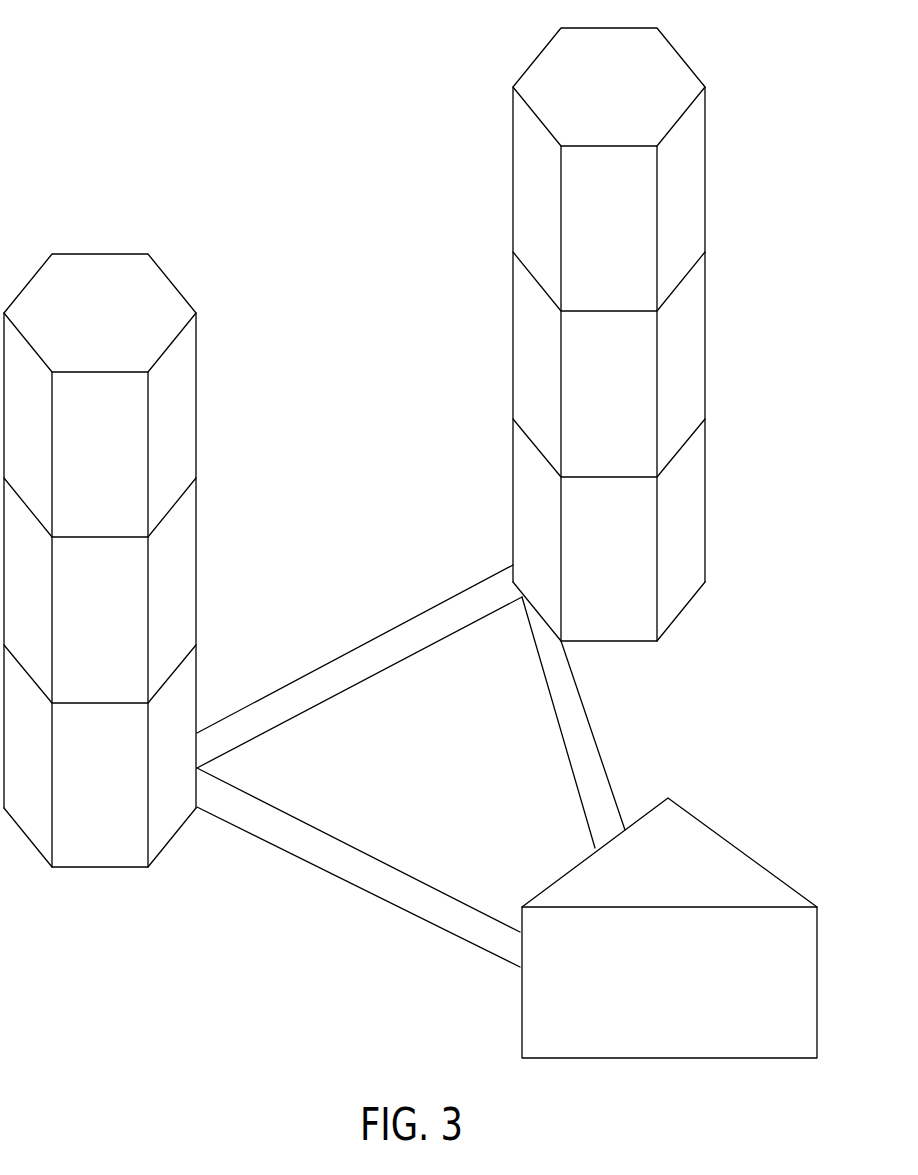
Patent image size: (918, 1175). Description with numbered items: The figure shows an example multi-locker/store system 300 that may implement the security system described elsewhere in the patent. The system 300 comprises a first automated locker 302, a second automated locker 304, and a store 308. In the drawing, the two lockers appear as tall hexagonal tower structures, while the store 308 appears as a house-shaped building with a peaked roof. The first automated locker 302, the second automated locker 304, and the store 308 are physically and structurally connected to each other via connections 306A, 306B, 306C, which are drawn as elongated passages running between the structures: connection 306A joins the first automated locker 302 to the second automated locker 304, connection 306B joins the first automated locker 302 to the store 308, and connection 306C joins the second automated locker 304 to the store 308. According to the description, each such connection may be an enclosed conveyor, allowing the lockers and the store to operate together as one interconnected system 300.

The multi-locker/store system 300 is at (128, 80).
The first automated locker 302 is at (213, 558).
The second automated locker 304 is at (748, 280).
The connection 306A is at (363, 657).
The connection 306B is at (370, 870).
The connection 306C is at (575, 720).
The store 308 is at (750, 837).